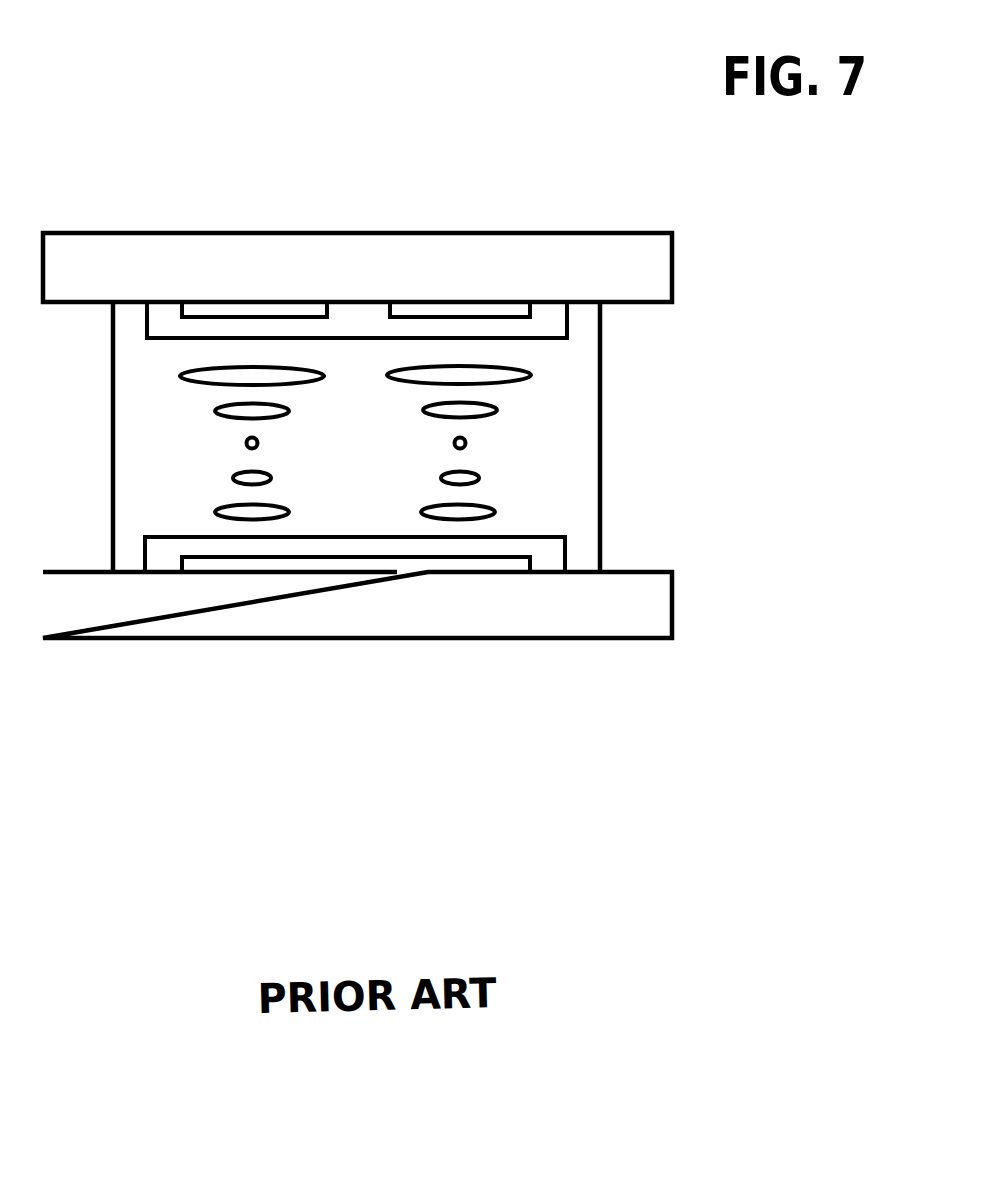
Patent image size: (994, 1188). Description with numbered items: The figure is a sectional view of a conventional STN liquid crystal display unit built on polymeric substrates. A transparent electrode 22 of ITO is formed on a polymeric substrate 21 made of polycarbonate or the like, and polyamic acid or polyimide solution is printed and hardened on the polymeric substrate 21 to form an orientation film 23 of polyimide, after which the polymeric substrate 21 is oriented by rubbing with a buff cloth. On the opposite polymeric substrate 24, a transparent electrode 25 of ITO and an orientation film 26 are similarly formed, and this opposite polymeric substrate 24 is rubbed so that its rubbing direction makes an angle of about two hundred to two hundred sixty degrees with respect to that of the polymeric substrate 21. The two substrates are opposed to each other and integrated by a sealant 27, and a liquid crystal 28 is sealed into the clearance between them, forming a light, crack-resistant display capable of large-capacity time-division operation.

The polymeric substrate 21 is at (178, 262).
The transparent electrode 22 is at (273, 308).
The orientation film 23 is at (347, 328).
The opposite polymeric substrate 24 is at (103, 607).
The transparent electrode 25 is at (493, 563).
The orientation film 26 is at (307, 550).
The sealant 27 is at (613, 340).
The liquid crystal 28 is at (517, 380).